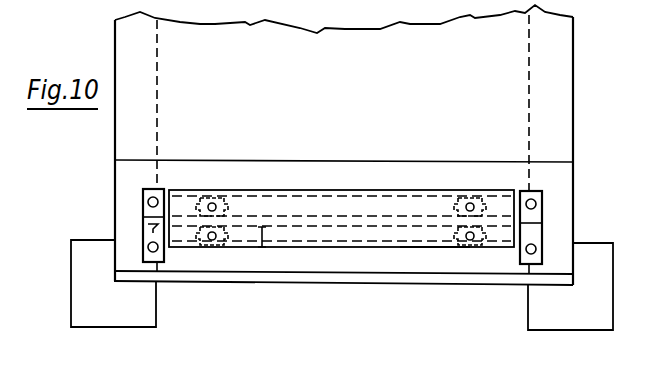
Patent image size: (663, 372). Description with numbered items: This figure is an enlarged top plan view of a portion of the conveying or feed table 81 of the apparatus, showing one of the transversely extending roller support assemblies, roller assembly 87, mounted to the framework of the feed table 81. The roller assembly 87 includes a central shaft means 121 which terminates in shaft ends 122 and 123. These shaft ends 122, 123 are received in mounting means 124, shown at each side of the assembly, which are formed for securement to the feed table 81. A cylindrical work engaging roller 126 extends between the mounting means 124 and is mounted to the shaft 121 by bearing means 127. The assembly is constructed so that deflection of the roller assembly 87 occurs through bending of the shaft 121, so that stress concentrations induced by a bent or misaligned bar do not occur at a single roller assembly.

The feed table 81 is at (590, 78).
The roller support assembly 87 is at (434, 256).
The central shaft means 121 is at (262, 228).
The shaft end 122 is at (537, 208).
The shaft end 123 is at (141, 231).
The mounting means 124 is at (133, 195).
The cylindrical work engaging roller 126 is at (358, 189).
The bearing means 127 is at (217, 185).